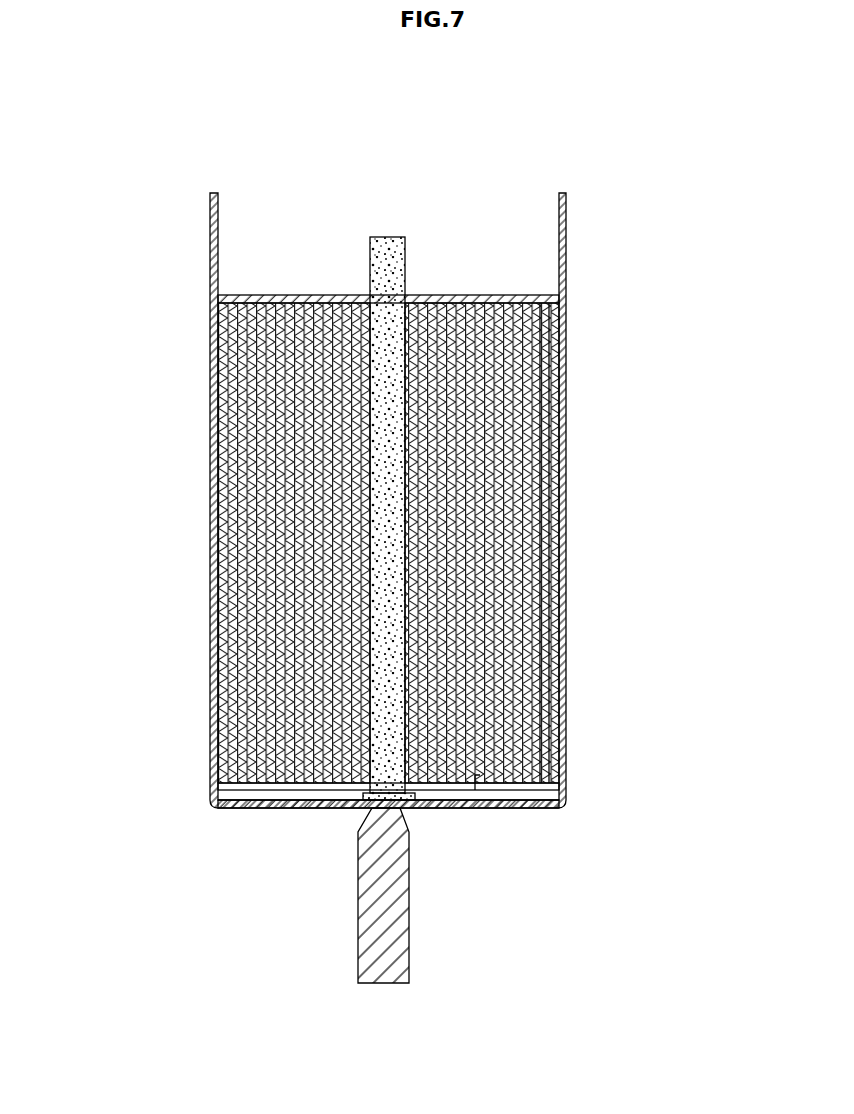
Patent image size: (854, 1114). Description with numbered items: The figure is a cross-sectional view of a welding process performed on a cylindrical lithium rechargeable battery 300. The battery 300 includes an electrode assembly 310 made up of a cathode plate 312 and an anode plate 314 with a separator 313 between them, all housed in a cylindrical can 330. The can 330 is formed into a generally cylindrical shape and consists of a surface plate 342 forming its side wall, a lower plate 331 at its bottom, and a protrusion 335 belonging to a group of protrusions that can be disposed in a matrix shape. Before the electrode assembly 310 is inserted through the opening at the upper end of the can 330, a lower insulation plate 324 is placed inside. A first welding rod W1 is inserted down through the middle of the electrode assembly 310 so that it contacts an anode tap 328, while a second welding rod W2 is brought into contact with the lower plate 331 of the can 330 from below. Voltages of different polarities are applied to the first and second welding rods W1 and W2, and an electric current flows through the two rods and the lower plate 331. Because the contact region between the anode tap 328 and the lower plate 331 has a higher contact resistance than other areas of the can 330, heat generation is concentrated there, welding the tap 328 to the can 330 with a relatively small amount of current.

The cylindrical lithium rechargeable battery 300 is at (594, 153).
The electrode assembly 310 is at (673, 343).
The cathode plate 312 is at (550, 341).
The separator 313 is at (550, 387).
The anode plate 314 is at (552, 417).
The lower insulation plate 324 is at (547, 795).
The anode tap 328 is at (470, 818).
The cylindrical can 330 is at (103, 332).
The lower plate 331 is at (232, 806).
The surface plate 342 is at (213, 335).
The protrusion 335 is at (410, 808).
The first welding rod W1 is at (390, 237).
The second welding rod W2 is at (380, 985).